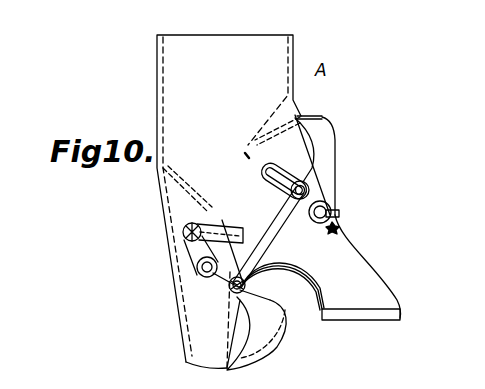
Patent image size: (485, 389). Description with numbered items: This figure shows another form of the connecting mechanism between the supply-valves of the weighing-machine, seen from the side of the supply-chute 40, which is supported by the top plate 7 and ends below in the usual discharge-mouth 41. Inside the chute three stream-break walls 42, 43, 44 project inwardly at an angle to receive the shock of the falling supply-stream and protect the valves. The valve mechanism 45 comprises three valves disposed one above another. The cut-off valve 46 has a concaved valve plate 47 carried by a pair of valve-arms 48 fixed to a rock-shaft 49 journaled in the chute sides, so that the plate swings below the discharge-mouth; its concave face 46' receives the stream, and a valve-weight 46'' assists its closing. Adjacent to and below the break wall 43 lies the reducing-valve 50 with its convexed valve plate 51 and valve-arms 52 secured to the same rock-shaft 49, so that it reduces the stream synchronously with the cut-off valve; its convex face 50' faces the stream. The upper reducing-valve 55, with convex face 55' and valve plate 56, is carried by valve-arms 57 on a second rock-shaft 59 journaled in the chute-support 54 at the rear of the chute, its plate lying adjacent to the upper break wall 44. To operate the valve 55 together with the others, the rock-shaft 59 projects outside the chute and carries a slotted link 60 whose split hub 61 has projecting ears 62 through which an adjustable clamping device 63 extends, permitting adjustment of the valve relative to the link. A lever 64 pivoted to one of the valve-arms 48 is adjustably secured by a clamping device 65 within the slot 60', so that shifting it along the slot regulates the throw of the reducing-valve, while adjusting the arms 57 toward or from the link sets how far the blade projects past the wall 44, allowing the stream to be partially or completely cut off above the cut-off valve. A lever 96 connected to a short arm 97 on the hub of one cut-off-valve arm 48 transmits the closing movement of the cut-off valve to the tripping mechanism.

The supply-chute 40 is at (294, 60).
The discharge-mouth 41 is at (190, 364).
The stream-break wall 42 is at (283, 248).
The stream-break wall 43 is at (183, 197).
The stream-break wall 44 is at (255, 140).
The valve mechanism 45 is at (268, 231).
The cut-off valve 46 is at (268, 334).
The concave face 46' is at (222, 339).
The valve-weight 46'' is at (285, 334).
The valve plate 47 is at (262, 366).
The valve-arms 48 is at (253, 305).
The rock-shaft 49 is at (200, 272).
The reducing-valve 50 is at (168, 232).
The convex face 50' is at (255, 219).
The valve plate 51 is at (226, 226).
The valve-arms 52 is at (186, 250).
The chute-support 54 is at (338, 230).
The reducing-valve 55 is at (327, 107).
The convex face 55' is at (226, 135).
The valve plate 56 is at (295, 150).
The valve-arms 57 is at (333, 142).
The rock-shaft 59 is at (319, 218).
The slotted link 60 is at (325, 178).
The slot 60' is at (288, 175).
The split hub 61 is at (339, 214).
The projecting ears 62 is at (335, 234).
The clamping device 63 is at (336, 224).
The lever 64 is at (266, 262).
The clamping device 65 is at (307, 196).
The top plate 7 is at (373, 306).
The lever 96 is at (230, 269).
The short arm 97 is at (188, 258).